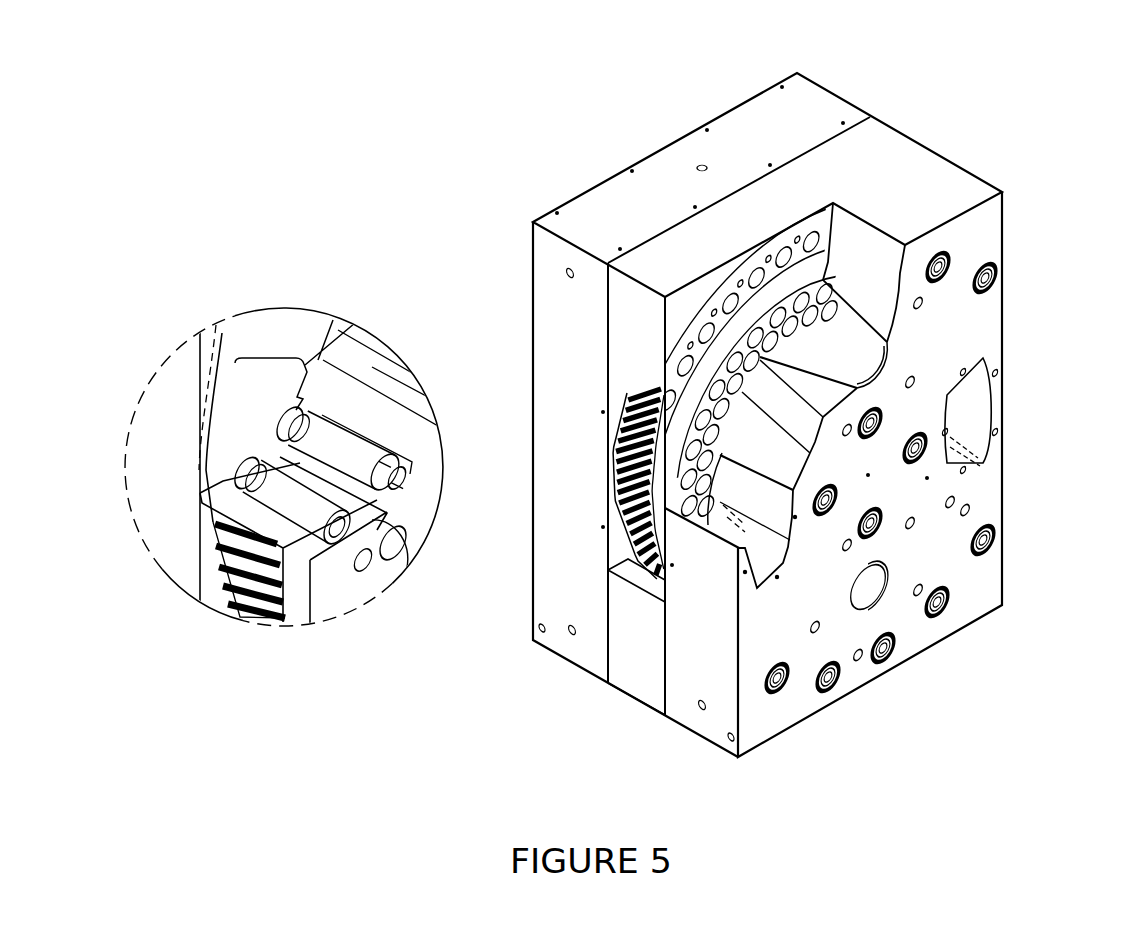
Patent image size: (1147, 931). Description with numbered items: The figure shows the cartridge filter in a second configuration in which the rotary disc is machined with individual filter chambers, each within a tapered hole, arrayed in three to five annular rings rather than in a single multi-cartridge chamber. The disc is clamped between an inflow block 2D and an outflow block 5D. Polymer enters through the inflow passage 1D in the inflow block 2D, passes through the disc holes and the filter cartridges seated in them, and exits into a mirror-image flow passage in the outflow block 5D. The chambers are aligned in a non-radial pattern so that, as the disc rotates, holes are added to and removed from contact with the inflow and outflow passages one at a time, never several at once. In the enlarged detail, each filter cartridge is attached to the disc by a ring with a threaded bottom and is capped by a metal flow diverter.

The outflow block 5D is at (788, 122).
The inflow block 2D is at (910, 198).
The inflow passage 1D is at (974, 409).